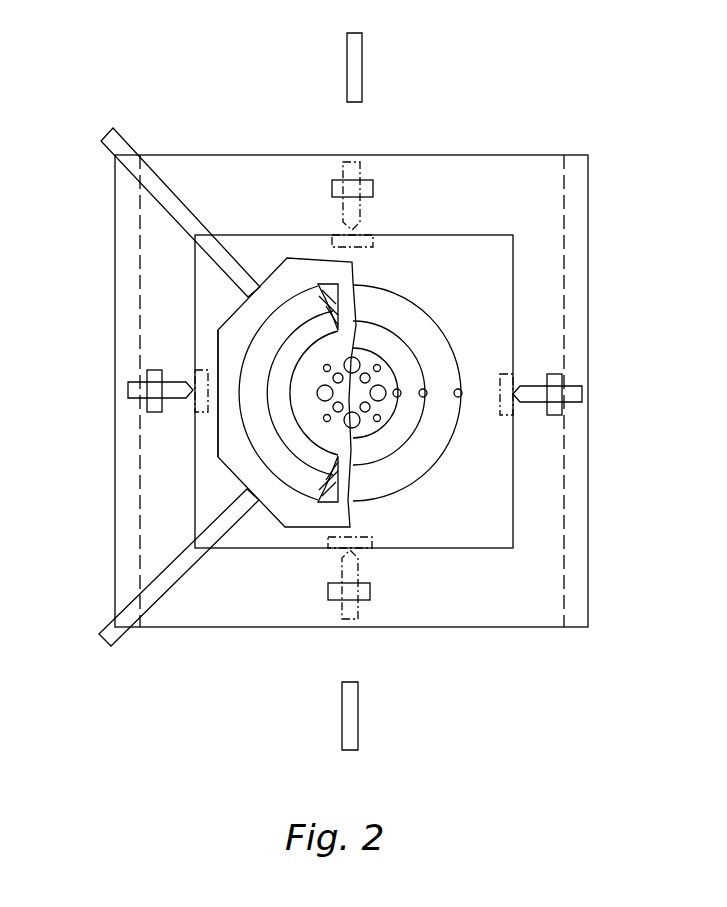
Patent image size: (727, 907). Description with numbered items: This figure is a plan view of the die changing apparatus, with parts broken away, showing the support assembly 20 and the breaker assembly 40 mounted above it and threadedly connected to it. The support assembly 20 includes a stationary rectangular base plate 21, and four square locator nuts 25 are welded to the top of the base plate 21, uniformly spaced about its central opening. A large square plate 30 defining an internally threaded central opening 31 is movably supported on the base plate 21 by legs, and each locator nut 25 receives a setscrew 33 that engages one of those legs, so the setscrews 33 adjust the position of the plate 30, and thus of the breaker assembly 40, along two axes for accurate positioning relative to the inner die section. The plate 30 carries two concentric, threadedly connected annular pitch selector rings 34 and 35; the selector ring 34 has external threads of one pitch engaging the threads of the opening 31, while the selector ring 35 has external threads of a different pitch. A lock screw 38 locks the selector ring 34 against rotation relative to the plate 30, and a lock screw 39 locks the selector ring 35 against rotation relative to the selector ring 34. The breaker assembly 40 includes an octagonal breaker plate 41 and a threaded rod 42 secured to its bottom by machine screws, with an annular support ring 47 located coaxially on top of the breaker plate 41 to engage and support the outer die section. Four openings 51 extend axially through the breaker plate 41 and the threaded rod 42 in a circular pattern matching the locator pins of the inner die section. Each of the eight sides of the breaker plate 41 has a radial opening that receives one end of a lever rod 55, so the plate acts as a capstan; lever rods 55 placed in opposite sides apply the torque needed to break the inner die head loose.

The support assembly 20 is at (554, 98).
The base plate 21 is at (588, 525).
The locator nuts 25 is at (373, 192).
The plate 30 is at (513, 545).
The central opening 31 is at (446, 340).
The setscrew 33 is at (356, 174).
The selector ring 34 is at (405, 316).
The selector ring 35 is at (406, 364).
The lock screw 38 is at (424, 398).
The lock screw 39 is at (462, 391).
The breaker assembly 40 is at (271, 250).
The breaker plate 41 is at (318, 258).
The threaded rod 42 is at (384, 430).
The support ring 47 is at (240, 438).
The openings 51 is at (379, 370).
The lever rod 55 is at (360, 62).